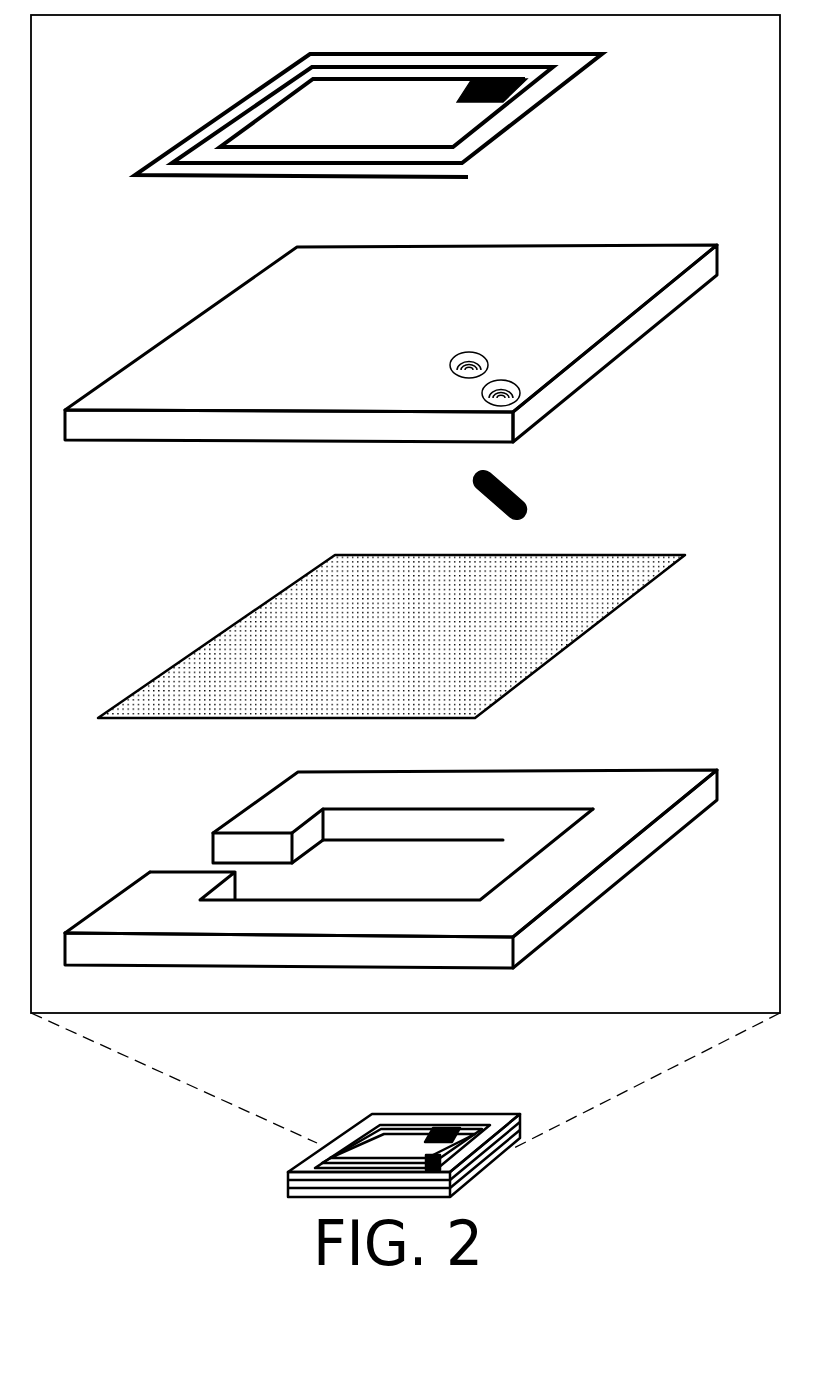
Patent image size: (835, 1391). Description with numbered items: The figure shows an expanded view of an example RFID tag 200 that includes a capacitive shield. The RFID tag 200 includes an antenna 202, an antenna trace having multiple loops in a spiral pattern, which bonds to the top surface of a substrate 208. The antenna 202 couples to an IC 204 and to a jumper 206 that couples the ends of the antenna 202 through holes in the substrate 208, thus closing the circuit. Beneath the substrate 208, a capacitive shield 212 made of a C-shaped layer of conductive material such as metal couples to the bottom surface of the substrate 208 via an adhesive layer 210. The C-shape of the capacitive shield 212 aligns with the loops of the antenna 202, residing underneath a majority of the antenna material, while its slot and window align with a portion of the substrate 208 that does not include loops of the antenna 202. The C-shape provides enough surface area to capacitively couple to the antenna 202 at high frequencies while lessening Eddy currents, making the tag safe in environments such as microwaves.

The RFID tag 200 is at (243, 1158).
The antenna 202 is at (217, 105).
The IC 204 is at (453, 102).
The jumper 206 is at (528, 507).
The substrate 208 is at (610, 225).
The adhesive layer 210 is at (607, 542).
The capacitive shield 212 is at (615, 752).